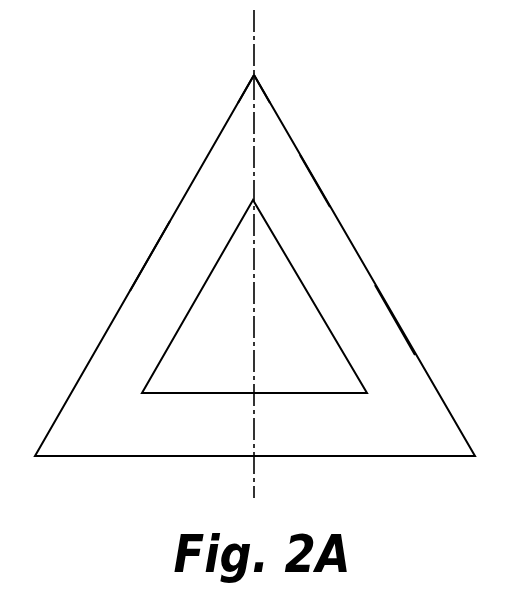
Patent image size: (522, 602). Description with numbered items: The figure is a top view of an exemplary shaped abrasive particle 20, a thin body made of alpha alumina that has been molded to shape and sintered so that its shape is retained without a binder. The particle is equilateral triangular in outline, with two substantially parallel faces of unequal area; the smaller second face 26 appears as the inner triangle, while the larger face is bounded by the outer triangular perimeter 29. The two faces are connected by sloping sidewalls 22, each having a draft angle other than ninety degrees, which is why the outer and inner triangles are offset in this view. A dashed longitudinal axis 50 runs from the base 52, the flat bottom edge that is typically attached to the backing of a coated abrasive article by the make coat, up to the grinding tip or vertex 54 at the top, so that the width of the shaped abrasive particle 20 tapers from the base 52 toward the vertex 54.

The shaped abrasive particle 20 is at (138, 151).
The sidewall 22 is at (172, 266).
The second face 26 is at (272, 312).
The triangular perimeter 29 is at (313, 173).
The longitudinal axis 50 is at (253, 47).
The base 52 is at (340, 432).
The vertex 54 is at (255, 74).